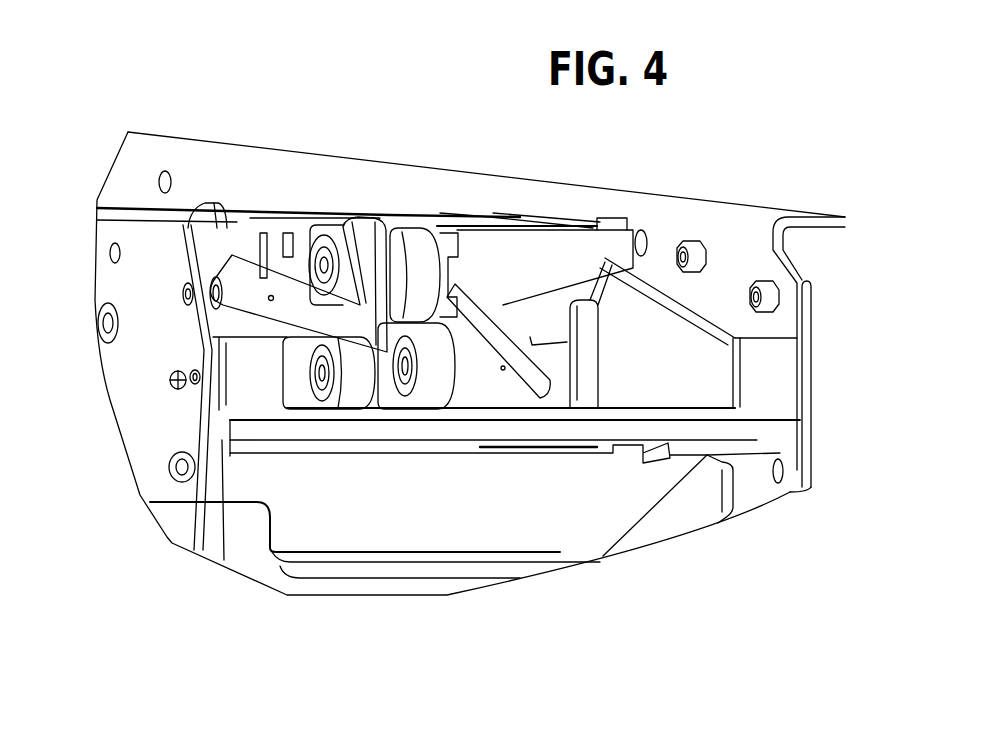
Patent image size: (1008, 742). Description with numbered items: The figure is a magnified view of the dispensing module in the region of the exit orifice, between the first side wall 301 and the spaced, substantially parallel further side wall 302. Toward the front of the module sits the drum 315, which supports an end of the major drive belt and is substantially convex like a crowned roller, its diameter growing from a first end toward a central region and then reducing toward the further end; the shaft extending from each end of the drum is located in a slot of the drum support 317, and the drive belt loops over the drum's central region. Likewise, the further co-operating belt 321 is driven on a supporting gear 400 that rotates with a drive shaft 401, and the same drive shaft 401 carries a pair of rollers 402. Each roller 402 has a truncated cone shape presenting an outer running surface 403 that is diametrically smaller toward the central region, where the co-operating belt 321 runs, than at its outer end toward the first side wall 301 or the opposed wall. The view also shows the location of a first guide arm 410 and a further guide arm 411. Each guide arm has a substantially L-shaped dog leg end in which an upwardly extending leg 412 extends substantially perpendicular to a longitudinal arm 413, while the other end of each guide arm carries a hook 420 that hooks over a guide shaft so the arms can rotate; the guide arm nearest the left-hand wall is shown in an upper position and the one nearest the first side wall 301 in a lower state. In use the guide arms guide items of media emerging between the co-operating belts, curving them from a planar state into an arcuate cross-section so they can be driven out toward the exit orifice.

The first side wall 301 is at (815, 316).
The further side wall 302 is at (122, 397).
The drum 315 is at (338, 247).
The drum support 317 is at (478, 240).
The co-operating belt 321 is at (357, 397).
The supporting gear 400 is at (317, 367).
The drive shaft 401 is at (402, 409).
The roller 402 is at (432, 388).
The outer running surface 403 is at (440, 345).
The first guide arm 410 is at (245, 272).
The further guide arm 411 is at (565, 398).
The upwardly extending leg 412 is at (387, 235).
The longitudinal arm 413 is at (270, 297).
The hook 420 is at (195, 207).